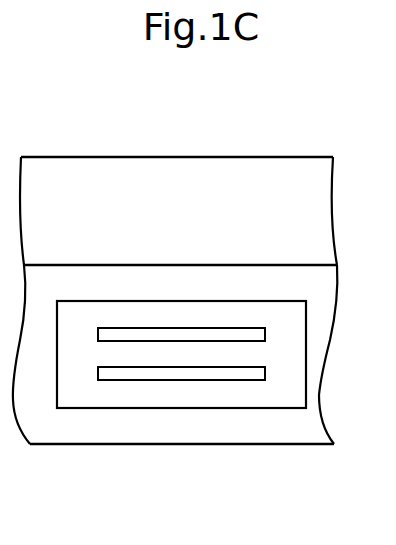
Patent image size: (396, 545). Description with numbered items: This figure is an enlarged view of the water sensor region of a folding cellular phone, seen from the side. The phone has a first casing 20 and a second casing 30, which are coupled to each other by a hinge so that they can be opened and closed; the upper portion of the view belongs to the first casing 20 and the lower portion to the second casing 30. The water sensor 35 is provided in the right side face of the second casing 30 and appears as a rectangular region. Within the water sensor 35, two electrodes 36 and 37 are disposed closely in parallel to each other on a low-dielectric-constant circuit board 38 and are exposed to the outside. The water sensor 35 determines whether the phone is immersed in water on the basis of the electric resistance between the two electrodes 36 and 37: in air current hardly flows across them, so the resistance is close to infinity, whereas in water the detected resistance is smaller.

The first casing 20 is at (215, 212).
The second casing 30 is at (45, 422).
The water sensor 35 is at (89, 410).
The electrode 36 is at (162, 333).
The electrode 37 is at (214, 373).
The low-dielectric-constant circuit board 38 is at (276, 396).